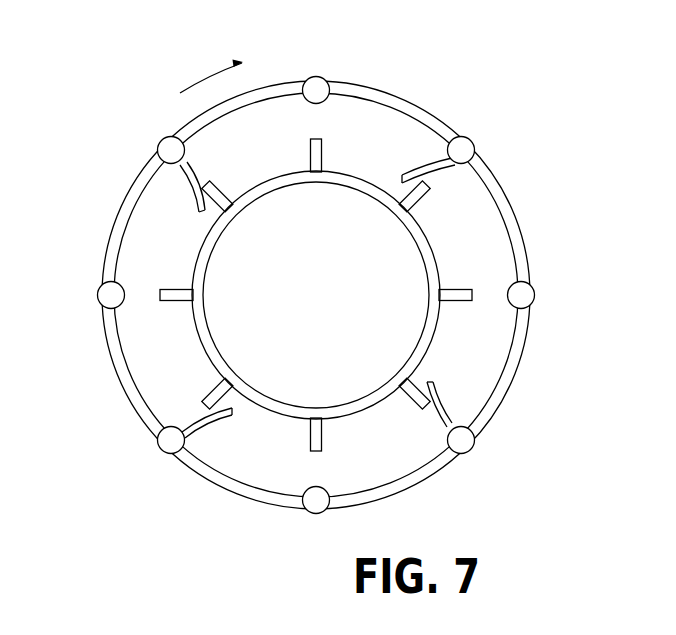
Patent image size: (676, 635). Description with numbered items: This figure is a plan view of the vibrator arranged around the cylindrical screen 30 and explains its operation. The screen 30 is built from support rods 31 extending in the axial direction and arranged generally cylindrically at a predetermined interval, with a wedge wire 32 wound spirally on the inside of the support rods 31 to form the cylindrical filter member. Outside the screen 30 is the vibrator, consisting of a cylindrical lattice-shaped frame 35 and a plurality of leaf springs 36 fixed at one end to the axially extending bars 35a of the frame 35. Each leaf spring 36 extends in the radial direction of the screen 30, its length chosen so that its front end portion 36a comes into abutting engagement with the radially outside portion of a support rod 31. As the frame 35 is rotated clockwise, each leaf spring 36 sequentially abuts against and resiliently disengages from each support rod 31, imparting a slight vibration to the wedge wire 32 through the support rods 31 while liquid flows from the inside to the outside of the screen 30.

The cylindrical screen 30 is at (318, 273).
The support rod 31 is at (460, 285).
The wedge wire 32 is at (437, 340).
The cylindrical frame 35 is at (408, 110).
The axially extending bar 35a is at (314, 86).
The leaf spring 36 is at (189, 180).
The front end portion 36a is at (199, 205).